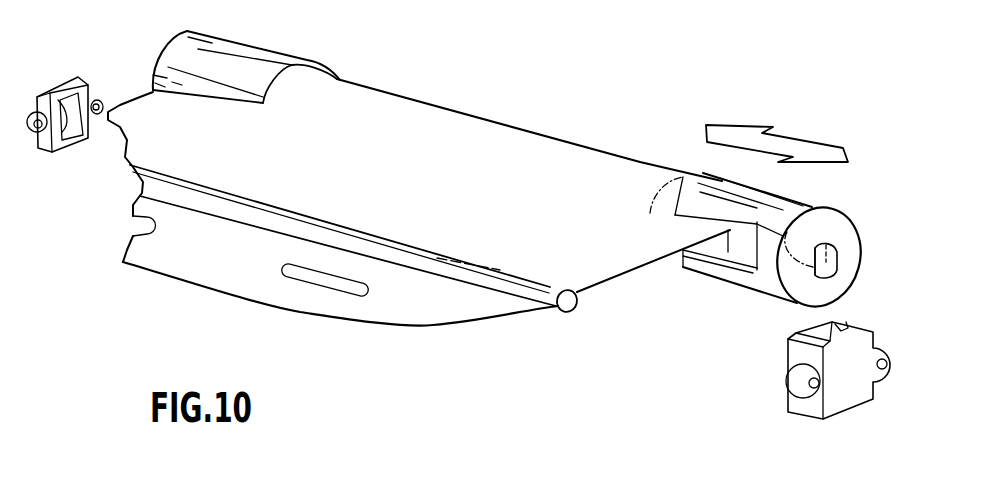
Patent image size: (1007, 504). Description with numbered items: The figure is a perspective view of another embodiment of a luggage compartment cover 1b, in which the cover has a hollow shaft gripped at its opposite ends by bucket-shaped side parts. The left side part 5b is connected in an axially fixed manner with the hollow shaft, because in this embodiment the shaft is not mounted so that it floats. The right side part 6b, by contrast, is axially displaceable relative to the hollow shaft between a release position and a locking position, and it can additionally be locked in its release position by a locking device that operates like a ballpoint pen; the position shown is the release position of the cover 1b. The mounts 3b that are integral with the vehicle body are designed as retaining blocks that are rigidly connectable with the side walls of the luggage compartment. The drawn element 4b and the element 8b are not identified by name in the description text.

The luggage compartment cover 1b is at (415, 164).
The mounts 3b is at (458, 267).
The plate 4b is at (426, 271).
The left side part 5b is at (246, 52).
The right side part 6b is at (763, 244).
The pin 8b is at (853, 280).